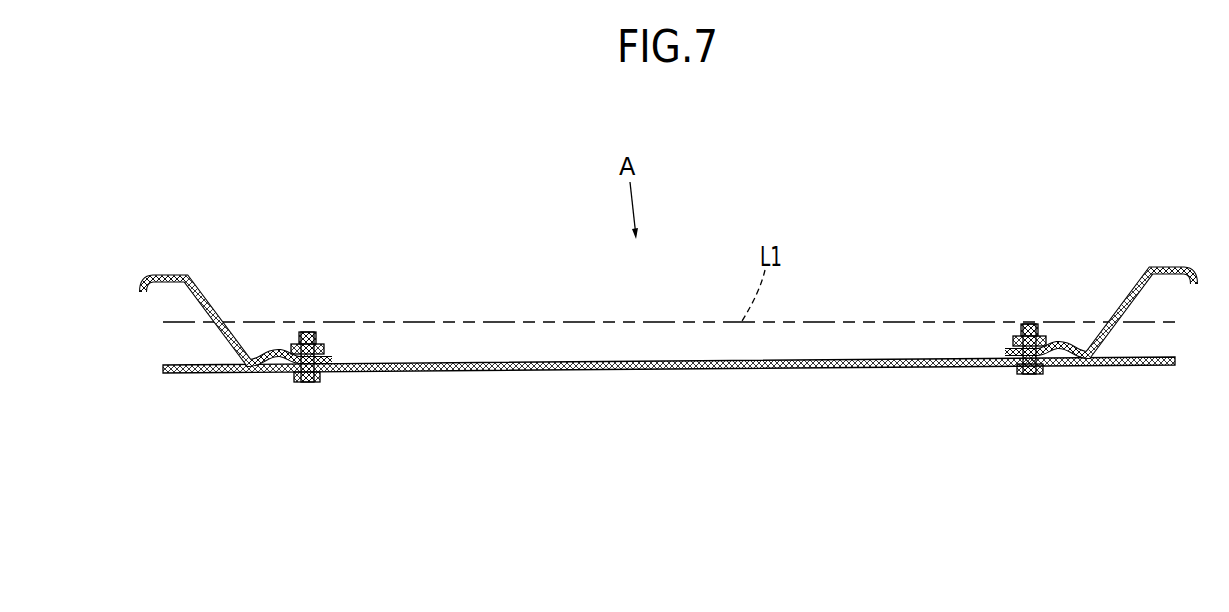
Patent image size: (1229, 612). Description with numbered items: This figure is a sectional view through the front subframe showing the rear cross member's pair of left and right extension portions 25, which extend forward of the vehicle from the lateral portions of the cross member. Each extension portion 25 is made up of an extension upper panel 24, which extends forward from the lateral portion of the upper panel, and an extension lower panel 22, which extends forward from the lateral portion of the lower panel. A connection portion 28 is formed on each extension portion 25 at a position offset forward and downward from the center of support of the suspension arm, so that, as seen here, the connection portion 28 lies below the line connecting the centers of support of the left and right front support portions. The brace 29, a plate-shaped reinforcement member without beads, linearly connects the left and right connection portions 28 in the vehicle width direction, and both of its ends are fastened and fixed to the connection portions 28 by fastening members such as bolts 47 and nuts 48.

The extension lower panel 22 is at (210, 375).
The extension upper panel 24 is at (160, 275).
The extension portion 25 is at (189, 252).
The connection portion 28 is at (285, 352).
The brace 29 is at (594, 384).
The bolt 47 is at (305, 383).
The nut 48 is at (320, 344).